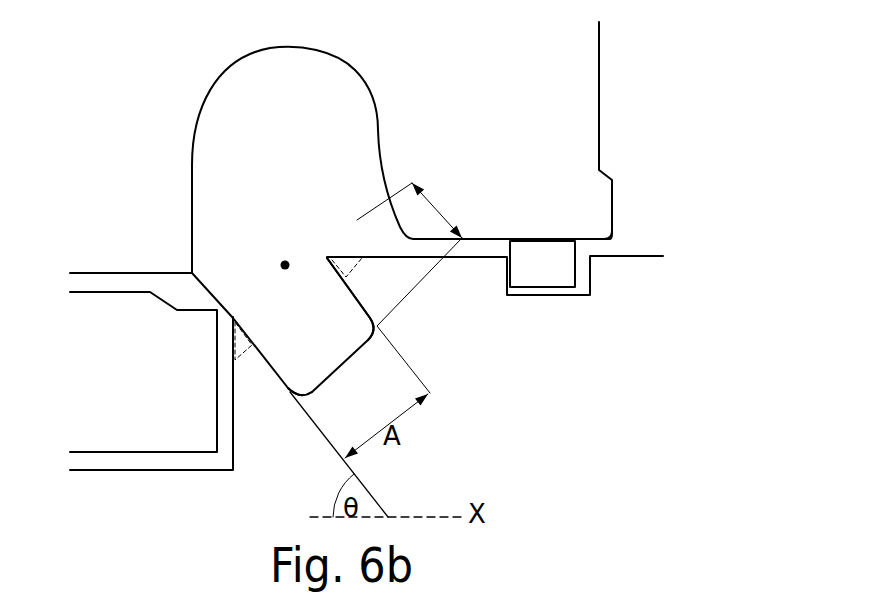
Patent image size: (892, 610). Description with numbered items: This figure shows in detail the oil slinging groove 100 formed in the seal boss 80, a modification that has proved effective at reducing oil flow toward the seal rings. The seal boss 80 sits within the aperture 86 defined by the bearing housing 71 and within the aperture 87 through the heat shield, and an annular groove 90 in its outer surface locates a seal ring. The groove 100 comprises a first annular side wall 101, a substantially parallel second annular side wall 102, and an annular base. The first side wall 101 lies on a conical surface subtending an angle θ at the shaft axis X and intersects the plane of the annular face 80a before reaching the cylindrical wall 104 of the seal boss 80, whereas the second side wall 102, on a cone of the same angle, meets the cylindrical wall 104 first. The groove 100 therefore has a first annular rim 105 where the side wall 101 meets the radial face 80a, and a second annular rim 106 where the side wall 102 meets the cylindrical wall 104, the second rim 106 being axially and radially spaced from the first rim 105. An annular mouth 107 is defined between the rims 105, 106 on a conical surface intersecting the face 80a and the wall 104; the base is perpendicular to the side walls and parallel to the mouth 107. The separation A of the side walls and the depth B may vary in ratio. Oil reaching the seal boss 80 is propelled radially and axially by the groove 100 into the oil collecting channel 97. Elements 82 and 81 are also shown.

The oil collecting channel 97 is at (282, 85).
The bearing housing 71 is at (580, 88).
The aperture 87 is at (610, 240).
The annular groove 90 is at (538, 265).
The cylindrical wall 104 is at (463, 260).
The lower body portion 82 is at (122, 345).
The annular face 80a is at (233, 417).
The first annular rim 105 is at (193, 268).
The oil slinging groove 100 is at (322, 342).
The second annular rim 106 is at (326, 258).
The annular mouth 107 is at (283, 263).
The second annular side wall 102 is at (353, 287).
The first annular side wall 101 is at (287, 388).
The aperture 86 is at (417, 235).
The seal boss 80 is at (527, 448).
The base 81 is at (94, 528).